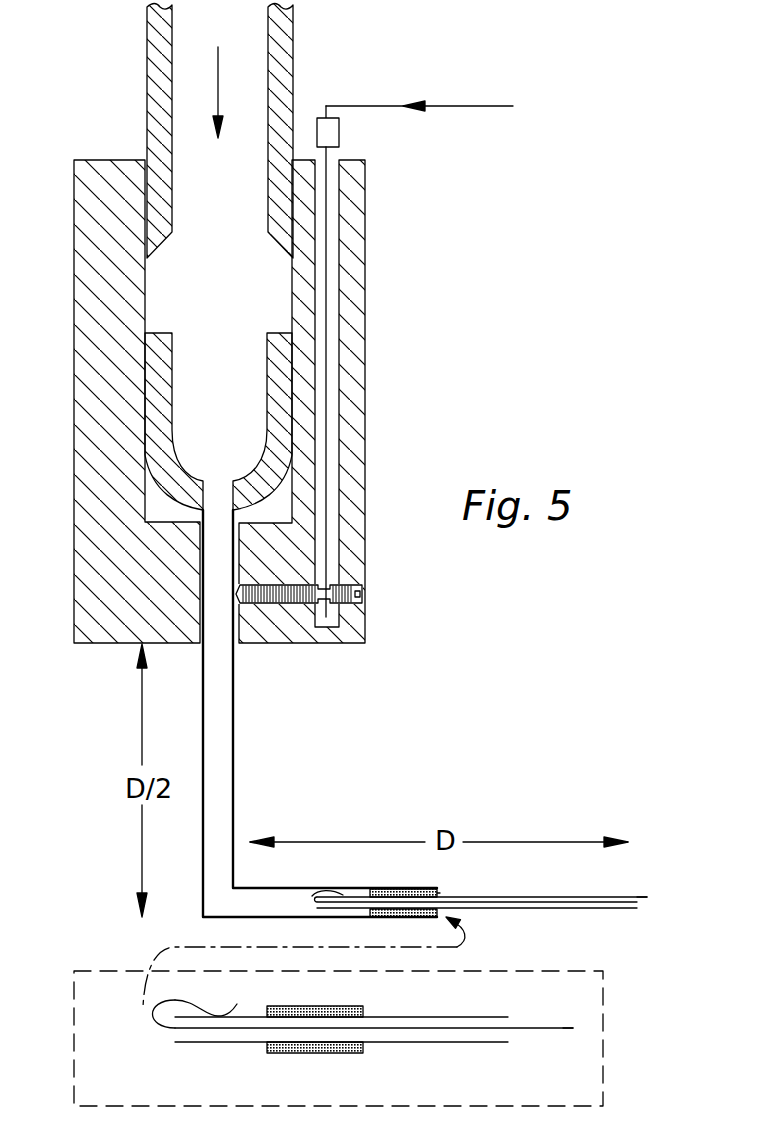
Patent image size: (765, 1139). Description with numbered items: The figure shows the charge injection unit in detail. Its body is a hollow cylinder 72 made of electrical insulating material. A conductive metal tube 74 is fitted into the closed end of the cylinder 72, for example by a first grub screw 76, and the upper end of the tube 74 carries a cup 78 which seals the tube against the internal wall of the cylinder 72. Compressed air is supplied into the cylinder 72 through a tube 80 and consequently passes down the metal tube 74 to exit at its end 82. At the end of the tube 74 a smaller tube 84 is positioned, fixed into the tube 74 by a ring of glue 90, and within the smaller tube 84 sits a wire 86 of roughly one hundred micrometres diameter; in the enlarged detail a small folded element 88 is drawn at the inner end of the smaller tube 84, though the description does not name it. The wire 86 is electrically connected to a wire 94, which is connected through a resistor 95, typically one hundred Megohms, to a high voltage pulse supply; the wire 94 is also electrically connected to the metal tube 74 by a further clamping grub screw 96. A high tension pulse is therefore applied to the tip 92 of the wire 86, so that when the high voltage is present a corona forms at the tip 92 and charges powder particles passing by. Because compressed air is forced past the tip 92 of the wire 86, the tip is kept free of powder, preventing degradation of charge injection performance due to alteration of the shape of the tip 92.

The hollow cylinder 72 is at (88, 436).
The conductive metal tube 74 is at (234, 735).
The first grub screw 76 is at (300, 605).
The cup 78 is at (167, 430).
The tube 80 is at (286, 51).
The end 82 is at (448, 888).
The smaller tube 84 is at (527, 897).
The wire 86 is at (642, 908).
The folded tab 88 is at (186, 998).
The ring of glue 90 is at (400, 888).
The tip 92 is at (662, 876).
The wire 94 is at (473, 107).
The resistor 95 is at (339, 137).
The further clamping grub screw 96 is at (363, 598).